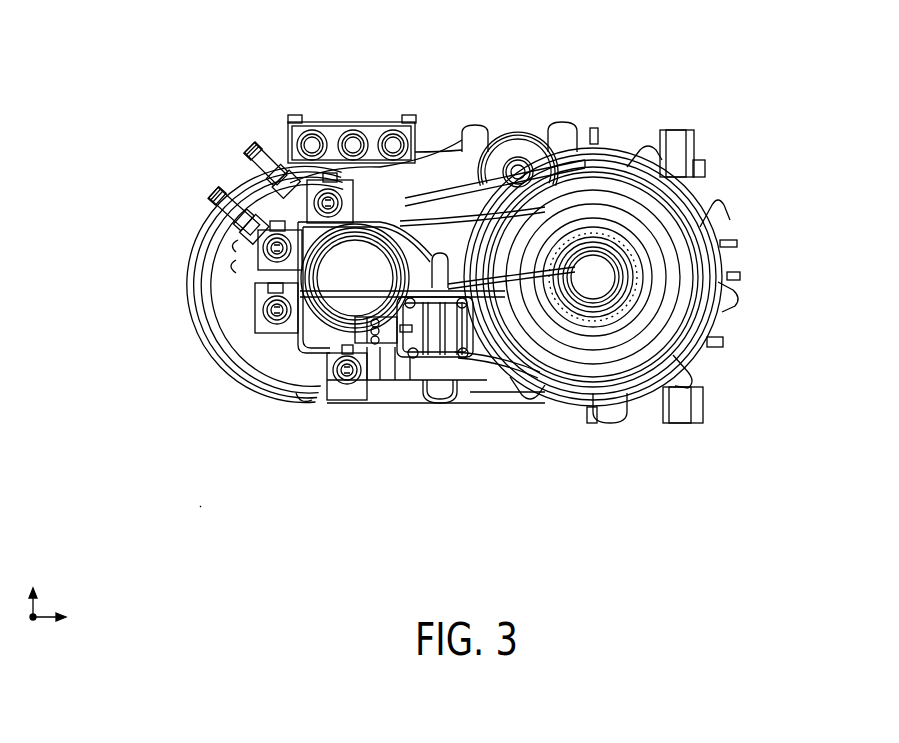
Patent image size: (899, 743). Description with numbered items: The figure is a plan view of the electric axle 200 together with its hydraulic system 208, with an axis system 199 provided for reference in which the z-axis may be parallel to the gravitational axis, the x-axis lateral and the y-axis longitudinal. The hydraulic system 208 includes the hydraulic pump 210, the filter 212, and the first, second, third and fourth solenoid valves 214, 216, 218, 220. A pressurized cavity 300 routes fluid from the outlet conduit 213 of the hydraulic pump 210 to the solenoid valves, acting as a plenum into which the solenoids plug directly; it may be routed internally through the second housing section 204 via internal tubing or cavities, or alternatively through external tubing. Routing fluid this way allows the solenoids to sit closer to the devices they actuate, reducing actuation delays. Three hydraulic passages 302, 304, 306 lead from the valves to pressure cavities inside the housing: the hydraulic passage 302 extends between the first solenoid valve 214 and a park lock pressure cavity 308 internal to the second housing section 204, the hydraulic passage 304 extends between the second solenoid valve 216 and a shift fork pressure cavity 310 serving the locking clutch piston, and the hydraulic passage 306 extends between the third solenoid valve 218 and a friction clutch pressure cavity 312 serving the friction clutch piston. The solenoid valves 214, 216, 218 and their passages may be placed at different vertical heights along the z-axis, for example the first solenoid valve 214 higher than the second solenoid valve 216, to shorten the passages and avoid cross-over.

The axis system 199 is at (80, 582).
The electric axle 200 is at (176, 83).
The second housing section 204 is at (518, 147).
The hydraulic system 208 is at (211, 487).
The hydraulic pump 210 is at (440, 400).
The filter 212 is at (398, 365).
The outlet conduit 213 is at (448, 275).
The first solenoid valve 214 is at (262, 176).
The second solenoid valve 216 is at (250, 237).
The third solenoid valve 218 is at (263, 318).
The fourth solenoid valve 220 is at (335, 388).
The pressurized cavity 300 is at (292, 363).
The hydraulic passage 302 is at (429, 208).
The hydraulic passage 304 is at (543, 214).
The hydraulic passage 306 is at (521, 337).
The park lock pressure cavity 308 is at (590, 160).
The shift fork pressure cavity 310 is at (575, 213).
The friction clutch pressure cavity 312 is at (582, 274).